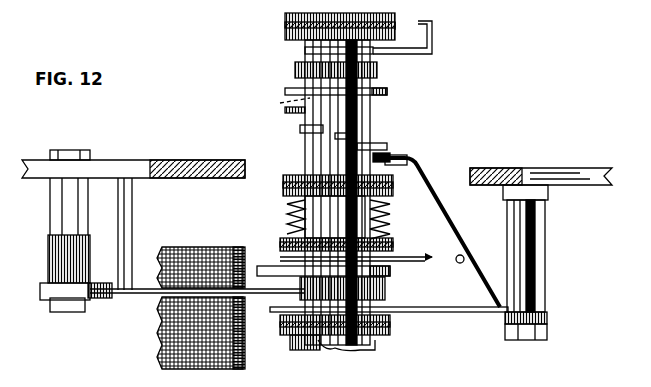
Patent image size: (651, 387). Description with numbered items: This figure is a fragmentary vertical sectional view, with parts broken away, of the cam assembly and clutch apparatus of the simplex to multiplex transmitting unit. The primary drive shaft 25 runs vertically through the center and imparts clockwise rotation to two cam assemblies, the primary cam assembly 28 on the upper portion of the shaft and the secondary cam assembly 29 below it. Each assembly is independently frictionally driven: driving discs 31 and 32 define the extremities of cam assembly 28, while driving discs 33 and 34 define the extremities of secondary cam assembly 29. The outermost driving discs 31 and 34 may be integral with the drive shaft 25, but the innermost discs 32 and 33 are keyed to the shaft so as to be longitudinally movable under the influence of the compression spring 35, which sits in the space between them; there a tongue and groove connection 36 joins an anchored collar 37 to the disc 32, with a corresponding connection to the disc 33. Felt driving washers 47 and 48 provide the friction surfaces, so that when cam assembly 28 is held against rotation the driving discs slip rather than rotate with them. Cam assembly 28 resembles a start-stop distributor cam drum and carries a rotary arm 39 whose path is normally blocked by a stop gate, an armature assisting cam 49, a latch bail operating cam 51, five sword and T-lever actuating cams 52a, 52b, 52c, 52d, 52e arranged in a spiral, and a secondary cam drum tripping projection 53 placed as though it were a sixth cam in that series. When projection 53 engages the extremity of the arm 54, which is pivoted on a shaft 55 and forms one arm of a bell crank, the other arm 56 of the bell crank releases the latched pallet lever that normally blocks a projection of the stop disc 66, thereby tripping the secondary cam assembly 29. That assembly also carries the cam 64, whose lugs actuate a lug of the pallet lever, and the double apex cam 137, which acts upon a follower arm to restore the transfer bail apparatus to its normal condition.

The felt driving washer 47 is at (286, 22).
The driving disc 31 is at (398, 22).
The primary cam assembly 28 is at (298, 50).
The rotary arm 39 is at (432, 50).
The armature assisting cam 49 is at (378, 70).
The latch bail operating cam 51 is at (285, 92).
The sword and T-lever actuating cam 52a is at (278, 108).
The sword and T-lever actuating cam 52b is at (300, 128).
The sword and T-lever actuating cam 52c is at (334, 136).
The sword and T-lever actuating cam 52d is at (380, 143).
The sword and T-lever actuating cam 52e is at (392, 151).
The secondary cam drum tripping projection 53 is at (408, 160).
The arm 54 is at (455, 232).
The felt driving washer 48 is at (283, 185).
The driving disc 32 is at (288, 197).
The compression spring 35 is at (288, 225).
The tongue and groove connection 36 is at (390, 207).
The anchored collar 37 is at (390, 229).
The driving disc 33 is at (393, 245).
The double apex cam 137 is at (280, 257).
The cam 64 is at (393, 270).
The secondary cam assembly 29 is at (398, 283).
The arm 56 is at (462, 313).
The shaft 55 is at (522, 262).
The driving disc 34 is at (275, 333).
The stop disc 66 is at (305, 351).
The primary drive shaft 25 is at (332, 352).